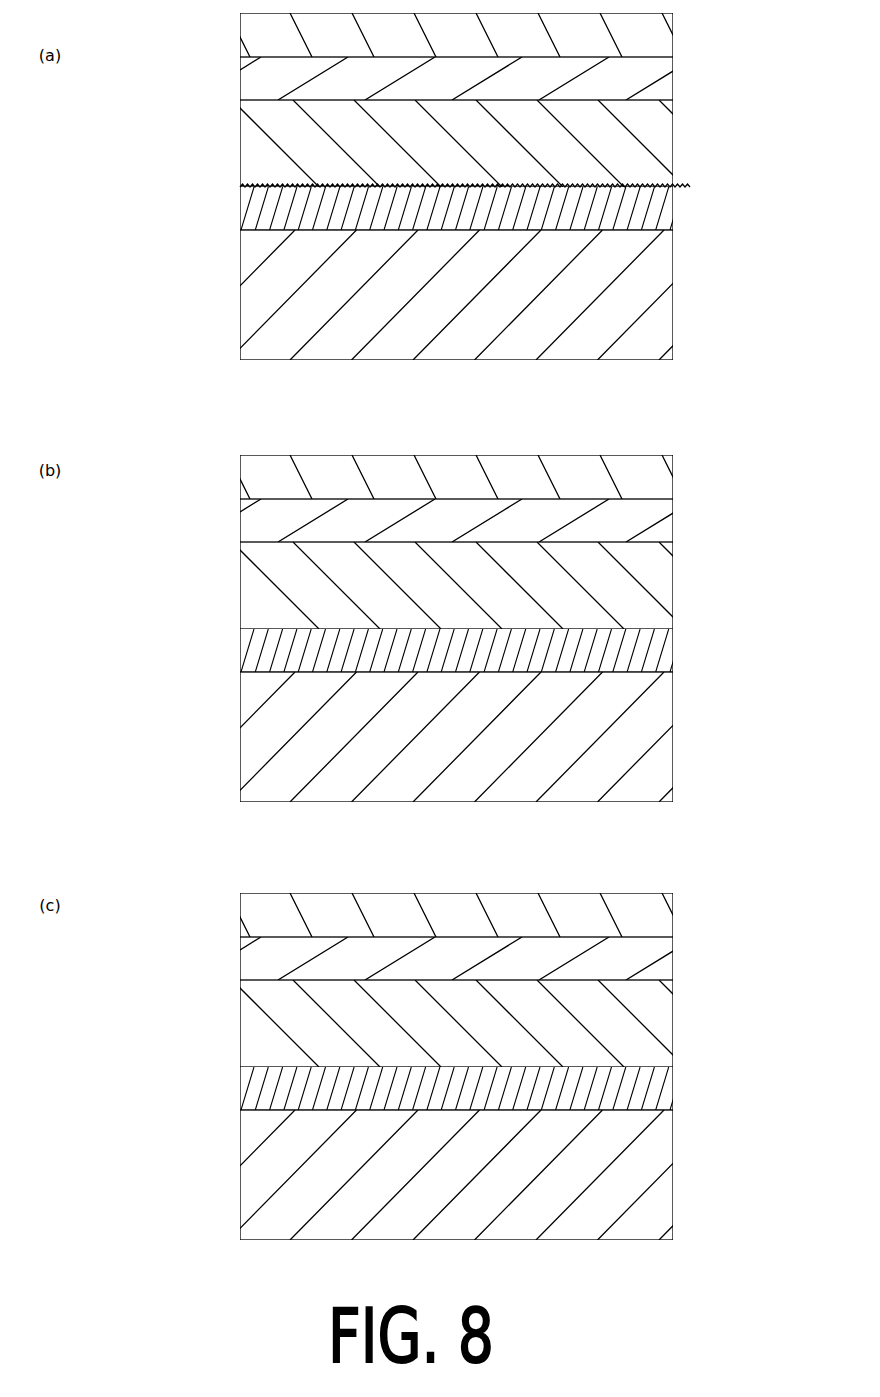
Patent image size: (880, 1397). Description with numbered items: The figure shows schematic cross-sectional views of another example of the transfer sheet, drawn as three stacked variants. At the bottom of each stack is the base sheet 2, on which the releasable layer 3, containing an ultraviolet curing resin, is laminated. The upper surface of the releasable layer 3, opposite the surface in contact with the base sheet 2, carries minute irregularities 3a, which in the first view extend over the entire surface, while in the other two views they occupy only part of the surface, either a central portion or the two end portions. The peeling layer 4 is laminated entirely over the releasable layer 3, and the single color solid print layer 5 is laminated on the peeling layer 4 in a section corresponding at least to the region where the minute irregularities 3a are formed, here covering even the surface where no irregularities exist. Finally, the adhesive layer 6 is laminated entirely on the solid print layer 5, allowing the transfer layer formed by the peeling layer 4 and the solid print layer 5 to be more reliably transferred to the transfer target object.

The base sheet 2 is at (477, 735).
The releasable layer 3 is at (499, 648).
The minute irregularities 3a is at (656, 176).
The peeling layer 4 is at (495, 583).
The solid print layer 5 is at (474, 518).
The adhesive layer 6 is at (493, 475).